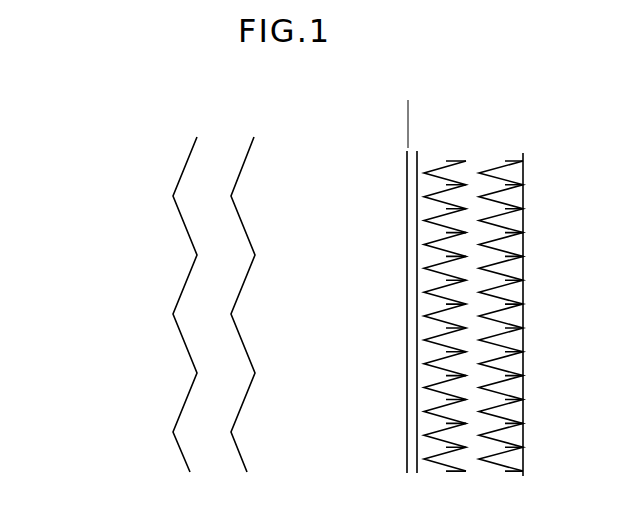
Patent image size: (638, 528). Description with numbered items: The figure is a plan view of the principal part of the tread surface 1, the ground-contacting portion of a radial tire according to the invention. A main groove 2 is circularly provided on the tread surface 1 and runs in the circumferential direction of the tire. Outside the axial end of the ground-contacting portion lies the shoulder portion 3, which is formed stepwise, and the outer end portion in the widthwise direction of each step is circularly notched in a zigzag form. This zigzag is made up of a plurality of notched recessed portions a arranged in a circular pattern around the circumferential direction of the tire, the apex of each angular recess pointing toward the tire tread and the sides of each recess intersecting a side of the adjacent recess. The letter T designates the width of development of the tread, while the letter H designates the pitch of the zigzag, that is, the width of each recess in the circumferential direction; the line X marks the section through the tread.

The tread surface 1 is at (443, 111).
The main groove 2 is at (233, 155).
The shoulder portion 3 is at (487, 152).
The notched recessed portions a is at (451, 173).
The width of development of the tread T is at (396, 108).
The length of the pitch of the zigzag H is at (523, 233).
The section line X- X is at (564, 340).